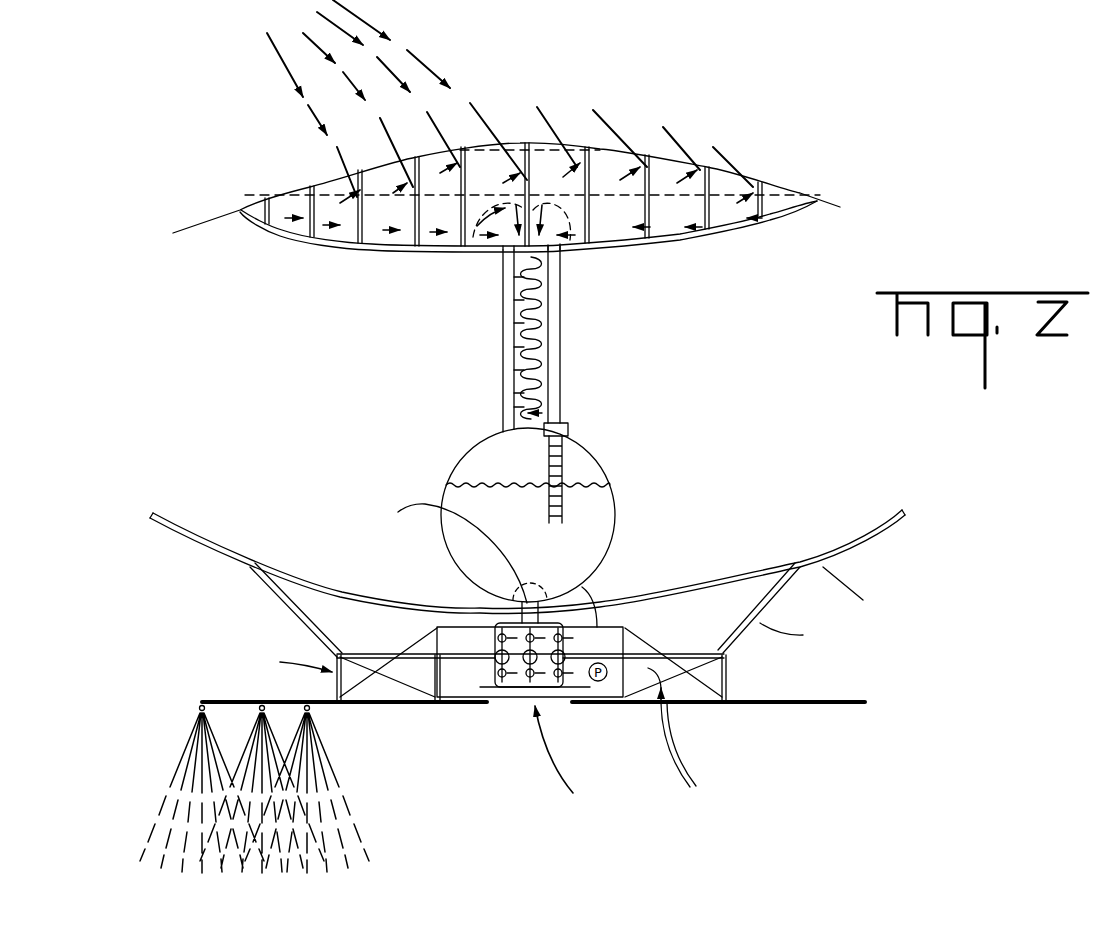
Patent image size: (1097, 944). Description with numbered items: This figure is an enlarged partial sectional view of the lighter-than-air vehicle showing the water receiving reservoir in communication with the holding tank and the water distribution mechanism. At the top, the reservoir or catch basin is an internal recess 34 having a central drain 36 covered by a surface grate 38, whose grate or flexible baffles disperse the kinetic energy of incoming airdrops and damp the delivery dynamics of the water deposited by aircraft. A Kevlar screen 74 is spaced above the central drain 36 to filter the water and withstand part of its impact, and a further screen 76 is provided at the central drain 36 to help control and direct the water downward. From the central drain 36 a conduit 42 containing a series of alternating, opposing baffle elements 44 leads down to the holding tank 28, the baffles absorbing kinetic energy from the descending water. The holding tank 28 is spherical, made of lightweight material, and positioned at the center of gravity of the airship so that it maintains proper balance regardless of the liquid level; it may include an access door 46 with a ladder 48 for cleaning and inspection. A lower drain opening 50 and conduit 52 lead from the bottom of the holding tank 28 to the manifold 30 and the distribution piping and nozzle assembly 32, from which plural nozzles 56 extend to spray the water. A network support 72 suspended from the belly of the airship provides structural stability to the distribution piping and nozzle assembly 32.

The holding tank 28 is at (613, 540).
The manifold 30 is at (527, 703).
The distribution piping and nozzles 32 is at (707, 703).
The internal recess 34 is at (727, 232).
The central drain 36 is at (560, 253).
The surface grate 38 is at (707, 183).
The conduit 42 is at (560, 343).
The baffle elements 44 is at (517, 330).
The access door 46 is at (566, 462).
The ladder 48 is at (570, 440).
The lower drain opening 50 is at (442, 553).
The conduit 52 is at (482, 609).
The nozzles 56 is at (310, 712).
The network support 72 is at (647, 640).
The screen 74 is at (553, 197).
The screen 76 is at (460, 238).